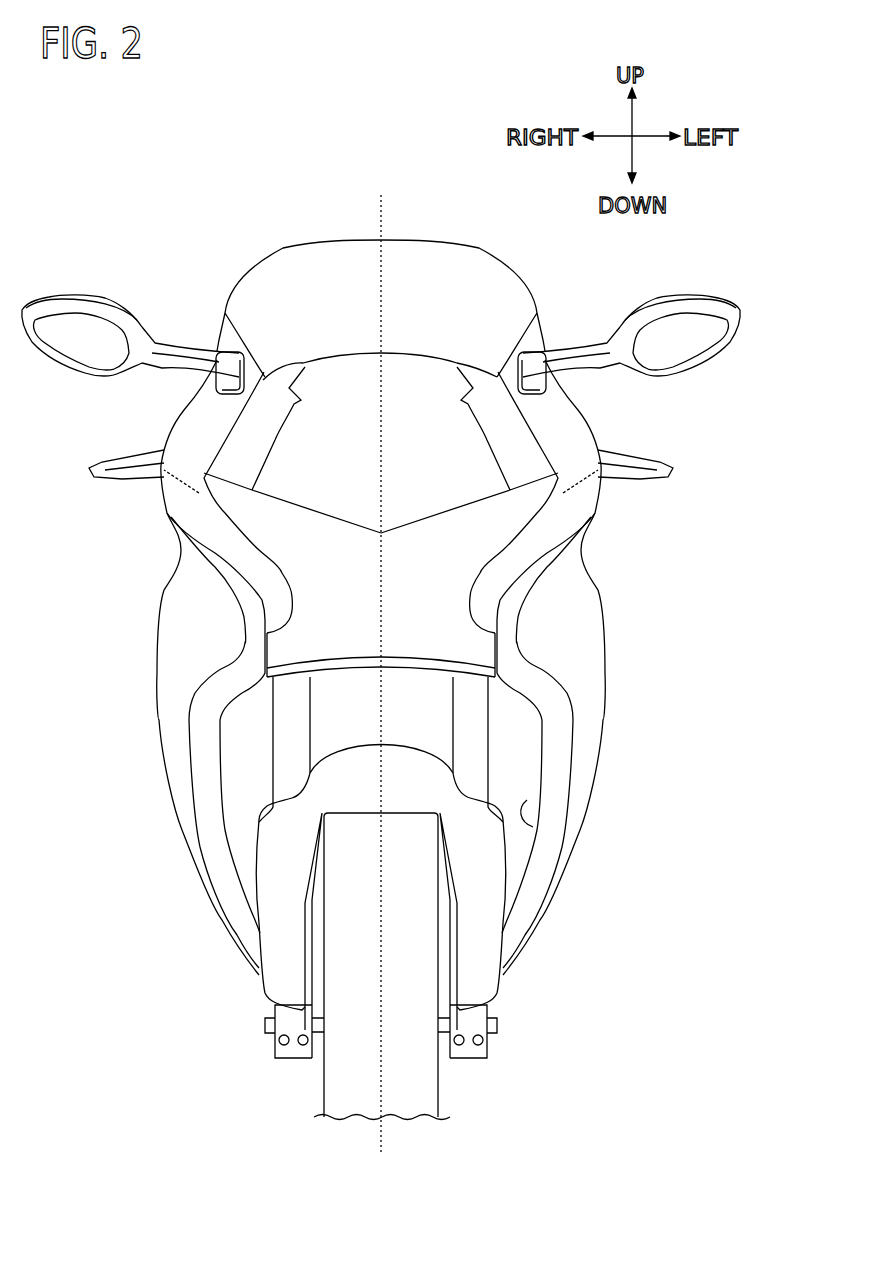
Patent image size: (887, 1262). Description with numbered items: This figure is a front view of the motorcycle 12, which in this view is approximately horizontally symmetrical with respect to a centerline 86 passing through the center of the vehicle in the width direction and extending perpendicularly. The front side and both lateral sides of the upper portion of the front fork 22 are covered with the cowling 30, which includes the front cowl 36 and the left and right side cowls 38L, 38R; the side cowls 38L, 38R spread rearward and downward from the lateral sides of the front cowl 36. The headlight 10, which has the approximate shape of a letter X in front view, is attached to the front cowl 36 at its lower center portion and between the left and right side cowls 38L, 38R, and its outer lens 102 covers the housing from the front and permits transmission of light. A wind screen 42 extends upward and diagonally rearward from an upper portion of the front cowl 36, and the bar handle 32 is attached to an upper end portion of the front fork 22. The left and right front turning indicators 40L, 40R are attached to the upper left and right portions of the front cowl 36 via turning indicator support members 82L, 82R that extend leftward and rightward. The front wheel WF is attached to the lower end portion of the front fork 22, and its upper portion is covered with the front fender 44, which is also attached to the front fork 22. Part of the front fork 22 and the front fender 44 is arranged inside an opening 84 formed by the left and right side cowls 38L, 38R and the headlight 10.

The motorcycle 12 is at (272, 155).
The centerline 86 is at (385, 203).
The wind screen 42 is at (312, 262).
The headlight 10 is at (508, 558).
The front cowl 36 is at (182, 430).
The cowling 30 is at (603, 605).
The left side cowl 38L is at (582, 748).
The right side cowl 38R is at (178, 744).
The bar handle 32 is at (640, 460).
The left turning indicator support member 82L is at (588, 353).
The right turning indicator support member 82R is at (172, 355).
The left front turning indicator 40L is at (693, 327).
The right front turning indicator 40R is at (68, 327).
The outer lens 102 is at (463, 645).
The front fork 22 is at (470, 746).
The front fender 44 is at (275, 907).
The opening 84 is at (528, 808).
The front wheel WF is at (420, 1090).